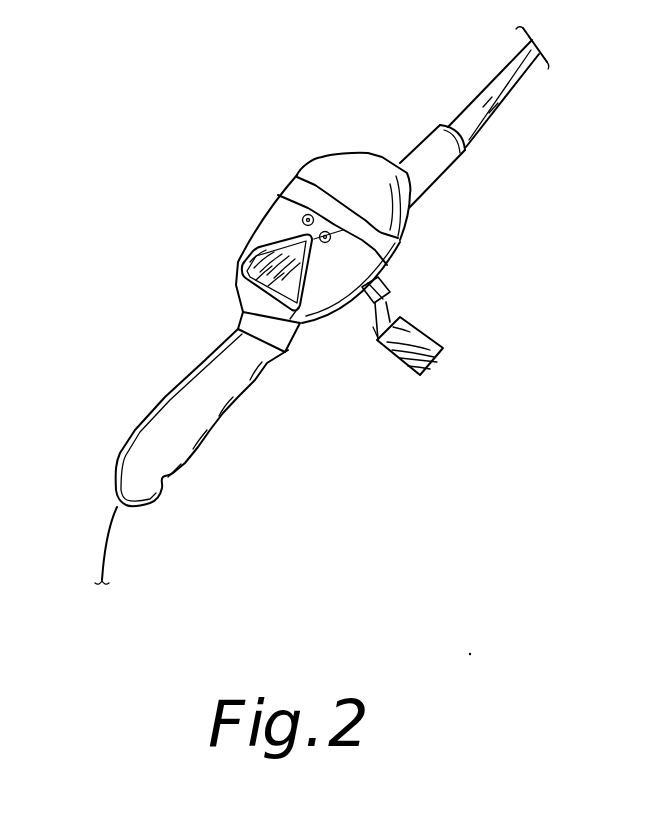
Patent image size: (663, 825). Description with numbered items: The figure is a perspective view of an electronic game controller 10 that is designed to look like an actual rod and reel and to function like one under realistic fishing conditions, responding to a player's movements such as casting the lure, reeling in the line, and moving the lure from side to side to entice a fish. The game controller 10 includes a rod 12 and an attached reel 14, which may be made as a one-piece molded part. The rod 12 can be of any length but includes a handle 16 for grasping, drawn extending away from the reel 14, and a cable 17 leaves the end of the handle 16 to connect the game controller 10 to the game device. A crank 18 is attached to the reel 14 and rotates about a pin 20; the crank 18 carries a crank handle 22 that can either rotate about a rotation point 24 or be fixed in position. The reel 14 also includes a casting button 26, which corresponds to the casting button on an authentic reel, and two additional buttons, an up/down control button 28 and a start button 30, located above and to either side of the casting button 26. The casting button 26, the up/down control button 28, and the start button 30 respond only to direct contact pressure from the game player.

The electronic game controller 10 is at (166, 148).
The rod 12 is at (430, 163).
The reel 14 is at (300, 176).
The handle 16 is at (213, 397).
The cable 17 is at (110, 538).
The crank 18 is at (386, 309).
The pin 20 is at (383, 286).
The crank handle 22 is at (413, 357).
The rotation point 24 is at (373, 327).
The casting button 26 is at (271, 280).
The up/down control button 28 is at (299, 187).
The start button 30 is at (383, 245).